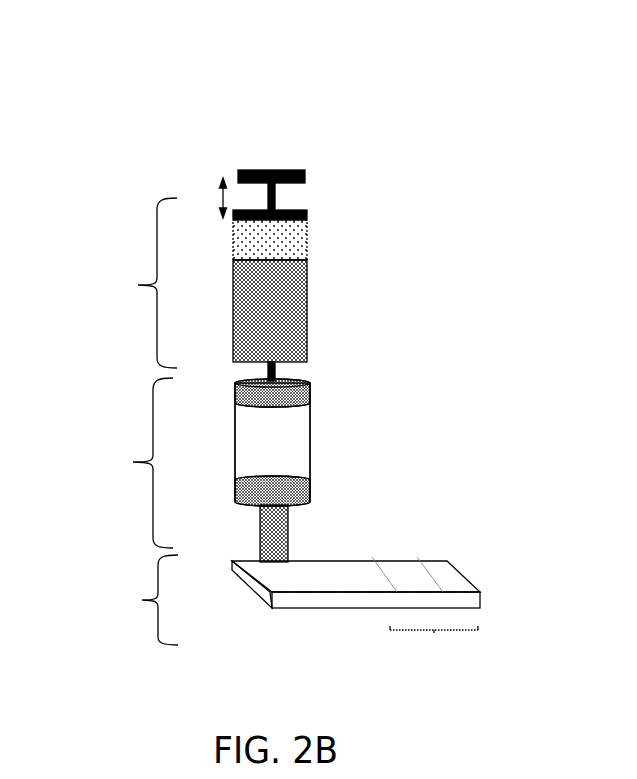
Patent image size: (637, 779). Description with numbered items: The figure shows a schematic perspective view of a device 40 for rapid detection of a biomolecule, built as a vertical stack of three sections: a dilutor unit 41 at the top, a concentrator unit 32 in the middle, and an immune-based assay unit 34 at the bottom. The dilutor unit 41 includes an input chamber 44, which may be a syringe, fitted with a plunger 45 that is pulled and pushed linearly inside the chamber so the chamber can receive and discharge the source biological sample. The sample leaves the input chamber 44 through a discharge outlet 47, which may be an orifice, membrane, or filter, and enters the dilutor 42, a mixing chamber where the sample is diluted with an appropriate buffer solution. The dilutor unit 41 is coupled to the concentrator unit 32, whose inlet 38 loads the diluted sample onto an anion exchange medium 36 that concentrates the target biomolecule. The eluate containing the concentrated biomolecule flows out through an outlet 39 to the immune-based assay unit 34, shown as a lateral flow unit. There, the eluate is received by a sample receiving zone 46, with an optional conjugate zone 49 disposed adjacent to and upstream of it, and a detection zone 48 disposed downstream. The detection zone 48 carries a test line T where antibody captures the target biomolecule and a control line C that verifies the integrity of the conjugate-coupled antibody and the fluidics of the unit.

The device 40 is at (341, 369).
The dilutor unit 41 is at (129, 283).
The concentrator unit 32 is at (125, 463).
The immune-based assay unit 34 is at (127, 600).
The plunger 45 is at (305, 190).
The input chamber 44 is at (316, 236).
The discharge outlet 47 is at (320, 260).
The dilutor 42 is at (340, 318).
The inlet 38 is at (294, 370).
The anion exchange medium 36 is at (325, 455).
The outlet 39 is at (299, 523).
The sample receiving zone 46 is at (290, 587).
The conjugate zone 49 is at (256, 578).
The detection zone 48 is at (434, 637).